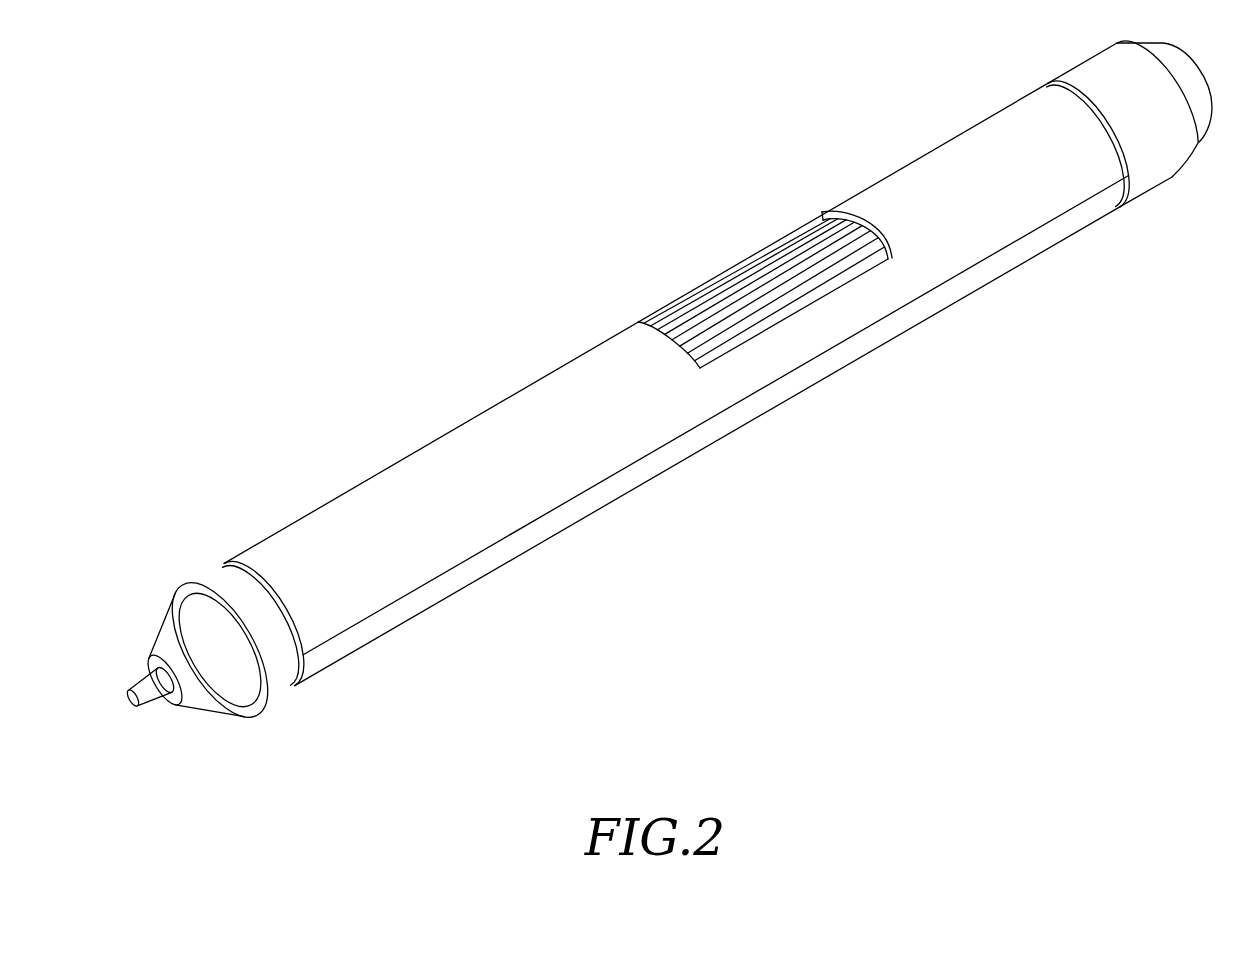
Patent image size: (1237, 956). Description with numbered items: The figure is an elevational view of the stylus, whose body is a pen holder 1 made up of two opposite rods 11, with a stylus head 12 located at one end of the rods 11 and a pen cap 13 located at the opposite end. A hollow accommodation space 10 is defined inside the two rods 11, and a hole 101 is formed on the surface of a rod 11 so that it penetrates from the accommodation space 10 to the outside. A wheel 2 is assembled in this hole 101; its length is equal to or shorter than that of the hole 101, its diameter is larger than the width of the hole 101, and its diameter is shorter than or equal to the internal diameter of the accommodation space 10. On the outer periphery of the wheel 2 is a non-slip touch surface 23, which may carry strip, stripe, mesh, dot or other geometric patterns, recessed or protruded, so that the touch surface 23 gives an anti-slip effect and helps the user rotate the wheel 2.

The pen holder 1 is at (299, 489).
The accommodation space 10 is at (780, 384).
The hole 101 is at (742, 341).
The rods 11 is at (432, 532).
The stylus head 12 is at (209, 685).
The pen cap 13 is at (1157, 170).
The wheel 2 is at (905, 418).
The touch surface 23 is at (785, 280).